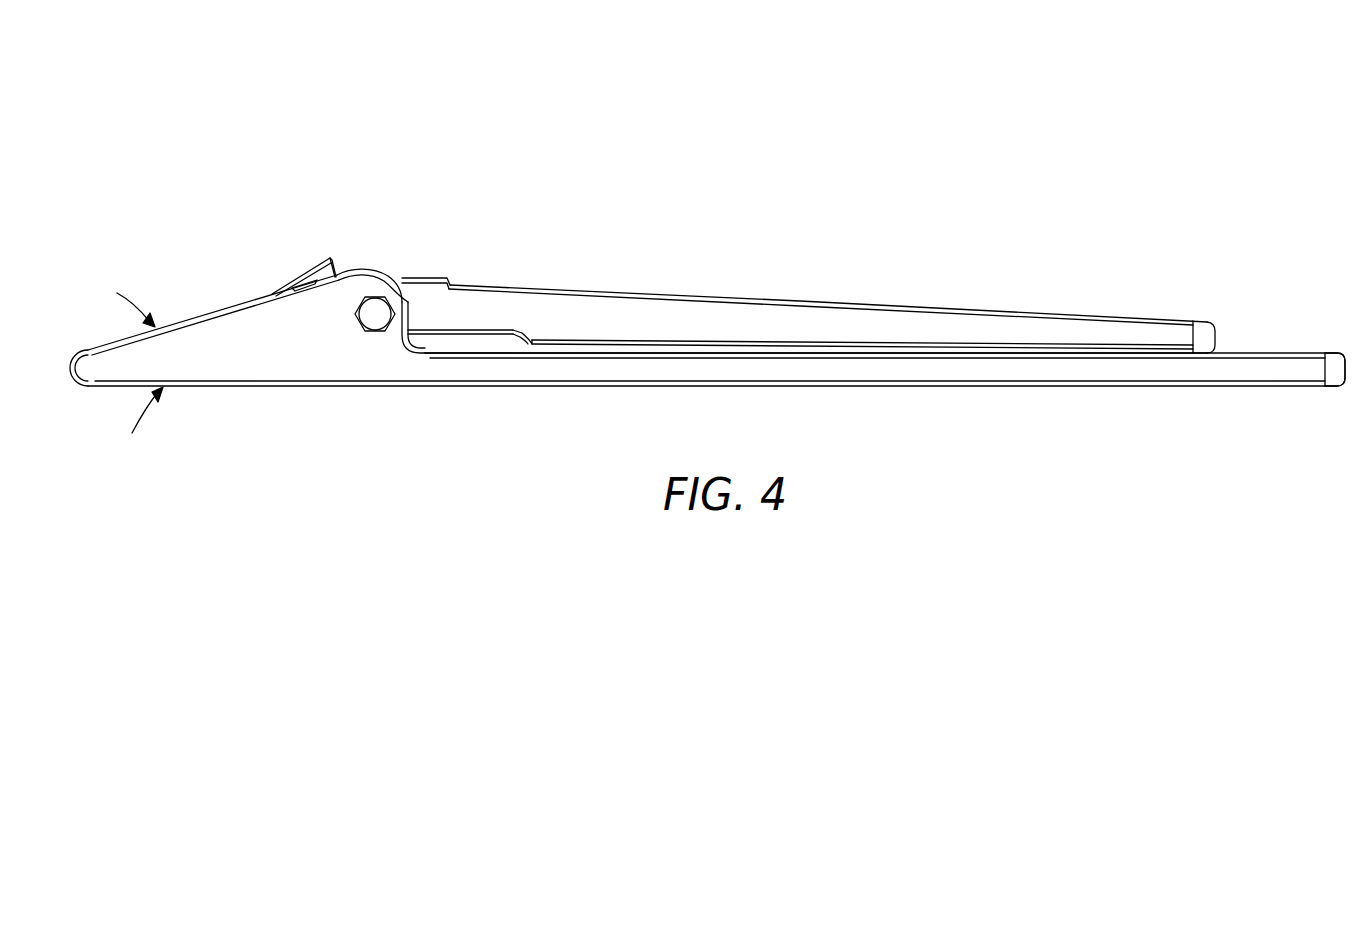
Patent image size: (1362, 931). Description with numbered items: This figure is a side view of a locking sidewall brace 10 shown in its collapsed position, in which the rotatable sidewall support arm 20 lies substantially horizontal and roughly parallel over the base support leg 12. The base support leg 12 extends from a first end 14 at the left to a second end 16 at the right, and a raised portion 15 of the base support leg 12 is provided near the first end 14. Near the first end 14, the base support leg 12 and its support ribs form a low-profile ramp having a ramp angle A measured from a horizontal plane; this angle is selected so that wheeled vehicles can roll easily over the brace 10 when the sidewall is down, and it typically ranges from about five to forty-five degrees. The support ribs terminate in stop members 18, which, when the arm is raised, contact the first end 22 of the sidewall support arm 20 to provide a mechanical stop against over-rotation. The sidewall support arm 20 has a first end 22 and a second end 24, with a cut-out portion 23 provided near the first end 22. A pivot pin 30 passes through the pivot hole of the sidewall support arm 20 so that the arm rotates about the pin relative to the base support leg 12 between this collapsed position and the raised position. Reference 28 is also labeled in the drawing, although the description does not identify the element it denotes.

The locking sidewall brace 10 is at (667, 126).
The base support leg 12 is at (1035, 372).
The first end 14 is at (265, 367).
The raised portion 15 is at (353, 290).
The second end 16 is at (1355, 370).
The stop members 18 is at (323, 270).
The rotatable sidewall support arm 20 is at (725, 320).
The first end 22 is at (412, 292).
The cut-out portion 23 is at (510, 347).
The second end 24 is at (1217, 337).
The slot 28 is at (453, 343).
The pivot pin 30 is at (377, 318).
The ramp angle A is at (163, 360).